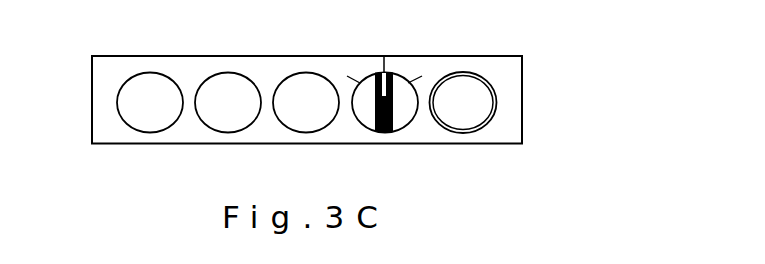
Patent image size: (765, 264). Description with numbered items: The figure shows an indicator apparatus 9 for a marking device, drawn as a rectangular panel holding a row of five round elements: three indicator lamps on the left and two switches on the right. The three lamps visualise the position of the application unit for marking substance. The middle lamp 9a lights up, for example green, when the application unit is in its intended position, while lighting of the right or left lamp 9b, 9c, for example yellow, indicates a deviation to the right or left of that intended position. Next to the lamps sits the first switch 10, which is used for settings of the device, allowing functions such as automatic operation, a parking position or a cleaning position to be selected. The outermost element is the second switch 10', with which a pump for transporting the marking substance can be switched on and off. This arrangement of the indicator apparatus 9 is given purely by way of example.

The indicator apparatus 9 is at (522, 83).
The middle lamp 9a is at (226, 98).
The right lamp 9b is at (307, 98).
The left lamp 9c is at (142, 112).
The first switch 10 is at (391, 123).
The second switch 10' is at (490, 138).